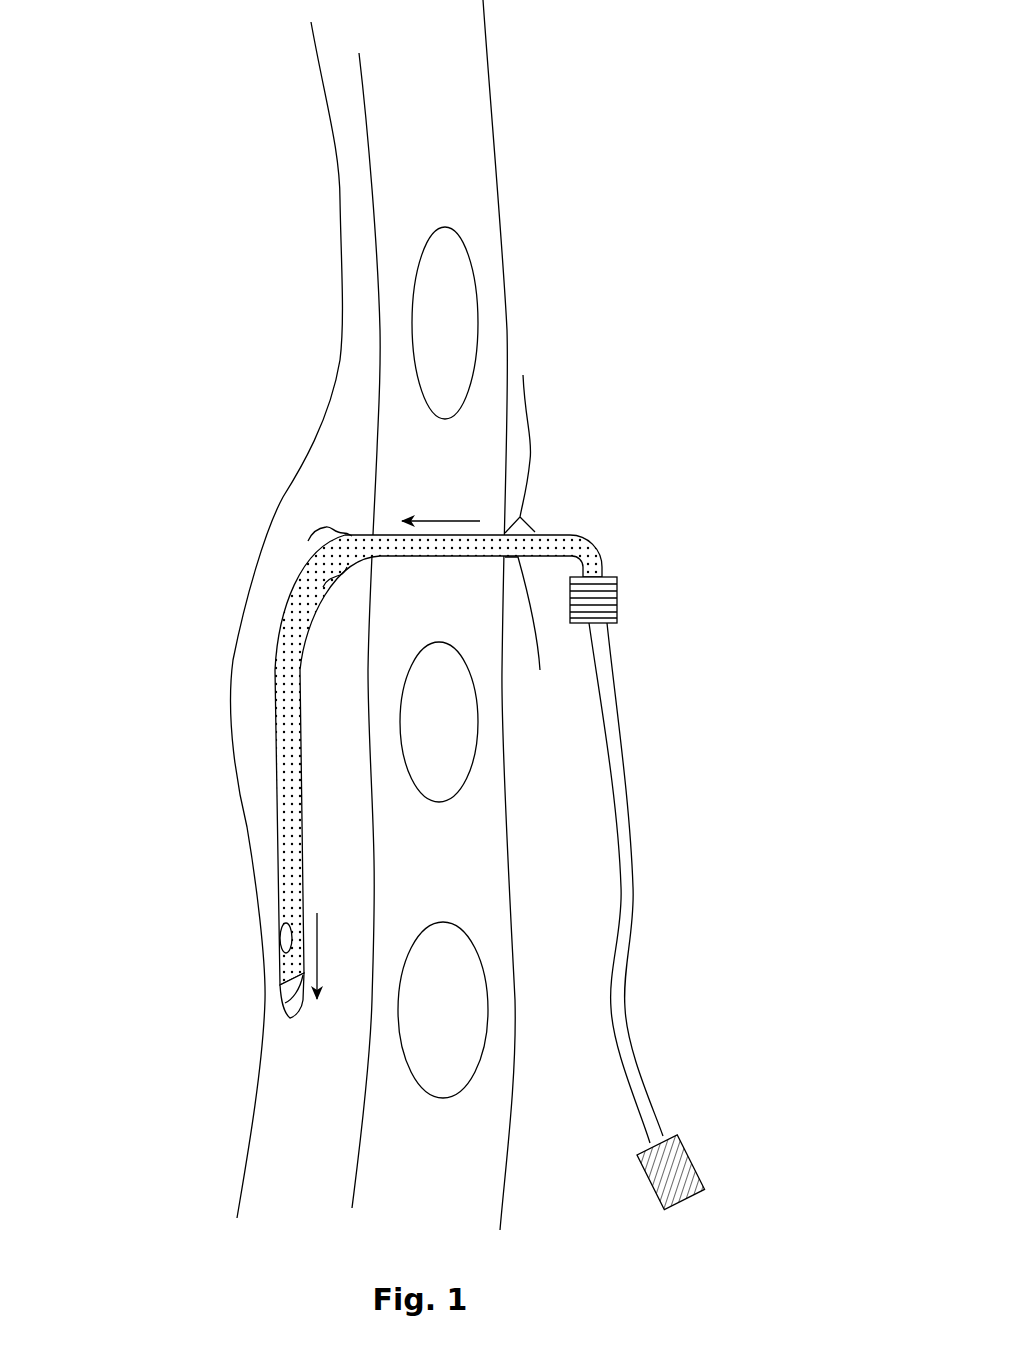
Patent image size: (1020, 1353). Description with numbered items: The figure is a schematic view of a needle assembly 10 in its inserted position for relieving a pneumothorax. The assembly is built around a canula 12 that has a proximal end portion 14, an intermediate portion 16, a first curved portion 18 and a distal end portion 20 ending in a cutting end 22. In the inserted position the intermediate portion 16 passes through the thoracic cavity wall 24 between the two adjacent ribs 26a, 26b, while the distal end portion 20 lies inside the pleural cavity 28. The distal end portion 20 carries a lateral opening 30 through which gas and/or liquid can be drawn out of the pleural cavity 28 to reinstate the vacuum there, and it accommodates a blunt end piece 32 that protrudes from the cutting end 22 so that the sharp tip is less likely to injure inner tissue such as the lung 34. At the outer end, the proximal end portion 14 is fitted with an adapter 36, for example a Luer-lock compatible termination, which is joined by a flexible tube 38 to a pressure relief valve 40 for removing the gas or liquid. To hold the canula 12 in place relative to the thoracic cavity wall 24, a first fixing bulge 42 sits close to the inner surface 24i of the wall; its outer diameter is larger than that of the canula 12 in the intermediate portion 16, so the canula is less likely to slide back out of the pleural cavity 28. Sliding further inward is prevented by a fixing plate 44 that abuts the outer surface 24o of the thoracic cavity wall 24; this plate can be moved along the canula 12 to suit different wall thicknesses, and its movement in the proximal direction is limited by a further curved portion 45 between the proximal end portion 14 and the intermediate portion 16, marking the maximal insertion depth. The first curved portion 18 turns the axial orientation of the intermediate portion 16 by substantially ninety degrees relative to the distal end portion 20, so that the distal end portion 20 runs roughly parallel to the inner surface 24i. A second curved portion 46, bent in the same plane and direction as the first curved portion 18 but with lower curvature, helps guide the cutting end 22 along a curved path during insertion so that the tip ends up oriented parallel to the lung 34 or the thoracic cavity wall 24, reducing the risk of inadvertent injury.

The needle assembly 10 is at (689, 408).
The canula 12 is at (447, 802).
The proximal end portion 14 is at (654, 558).
The intermediate portion 16 is at (443, 509).
The first curved portion 18 is at (282, 560).
The distal end portion 20 is at (241, 973).
The cutting end 22 is at (288, 1008).
The thoracic cavity wall 24 is at (461, 631).
The inner surface of the thoracic cavity wall 24i is at (370, 708).
The outer surface of the thoracic cavity wall 24o is at (513, 1072).
The rib 26a is at (478, 310).
The rib 26b is at (473, 758).
The pleural cavity 28 is at (353, 303).
The lateral opening 30 is at (278, 937).
The blunt end piece 32 is at (292, 1022).
The lung 34 is at (320, 418).
The adapter 36 is at (617, 605).
The flexible tube 38 is at (619, 768).
The pressure relief valve 40 is at (698, 1164).
The first fixing bulge 42 is at (308, 541).
The fixing plate 44 is at (530, 460).
The further curved portion 45 is at (594, 527).
The second curved portion 46 is at (251, 712).